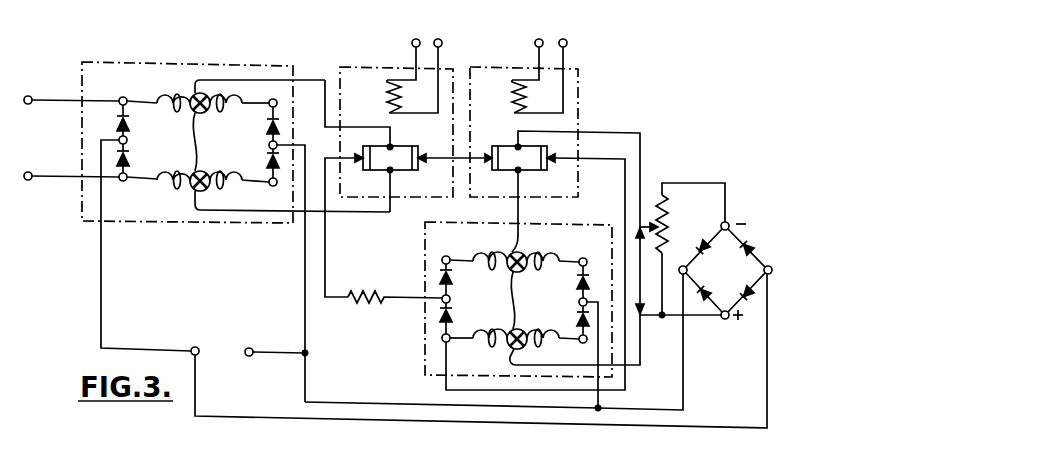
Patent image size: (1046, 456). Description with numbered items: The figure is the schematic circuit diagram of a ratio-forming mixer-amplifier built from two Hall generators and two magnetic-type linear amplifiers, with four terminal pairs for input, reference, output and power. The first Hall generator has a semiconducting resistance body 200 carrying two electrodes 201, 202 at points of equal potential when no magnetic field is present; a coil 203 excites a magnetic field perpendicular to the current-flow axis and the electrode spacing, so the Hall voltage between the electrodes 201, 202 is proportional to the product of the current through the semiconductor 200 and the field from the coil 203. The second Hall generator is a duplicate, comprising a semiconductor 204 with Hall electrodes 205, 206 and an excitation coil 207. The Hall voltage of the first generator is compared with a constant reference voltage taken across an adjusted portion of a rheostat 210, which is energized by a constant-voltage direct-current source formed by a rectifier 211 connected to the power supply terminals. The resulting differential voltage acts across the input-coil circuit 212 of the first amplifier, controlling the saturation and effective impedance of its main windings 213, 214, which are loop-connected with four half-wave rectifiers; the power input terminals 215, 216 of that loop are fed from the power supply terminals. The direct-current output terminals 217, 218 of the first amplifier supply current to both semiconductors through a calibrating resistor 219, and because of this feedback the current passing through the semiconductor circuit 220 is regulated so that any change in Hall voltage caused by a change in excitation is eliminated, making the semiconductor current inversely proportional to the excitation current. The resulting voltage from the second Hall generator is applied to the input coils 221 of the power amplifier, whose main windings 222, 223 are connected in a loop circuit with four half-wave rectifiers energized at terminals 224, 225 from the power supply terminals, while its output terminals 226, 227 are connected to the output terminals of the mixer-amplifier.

The semiconducting resistance body 200 is at (530, 169).
The electrode 201 is at (517, 146).
The electrode 202 is at (517, 171).
The coil 203 is at (514, 96).
The semiconductor 204 is at (402, 170).
The Hall electrode 205 is at (392, 146).
The Hall electrode 206 is at (390, 171).
The excitation coil 207 is at (388, 97).
The rheostat 210 is at (668, 222).
The rectifier 211 is at (741, 278).
The input-coil circuit 212 is at (520, 301).
The main winding 213 is at (553, 252).
The main winding 214 is at (547, 340).
The power input terminal 215 is at (452, 300).
The power input terminal 216 is at (580, 304).
The direct-current output terminal 217 is at (447, 256).
The direct-current output terminal 218 is at (449, 342).
The calibrating resistor 219 is at (381, 291).
The semiconductor circuit 220 is at (626, 198).
The input coils 221 is at (198, 140).
The main winding 222 is at (163, 98).
The main winding 223 is at (237, 181).
The terminal 224 is at (128, 147).
The terminal 225 is at (268, 146).
The output terminal 226 is at (128, 125).
The output terminal 227 is at (127, 183).